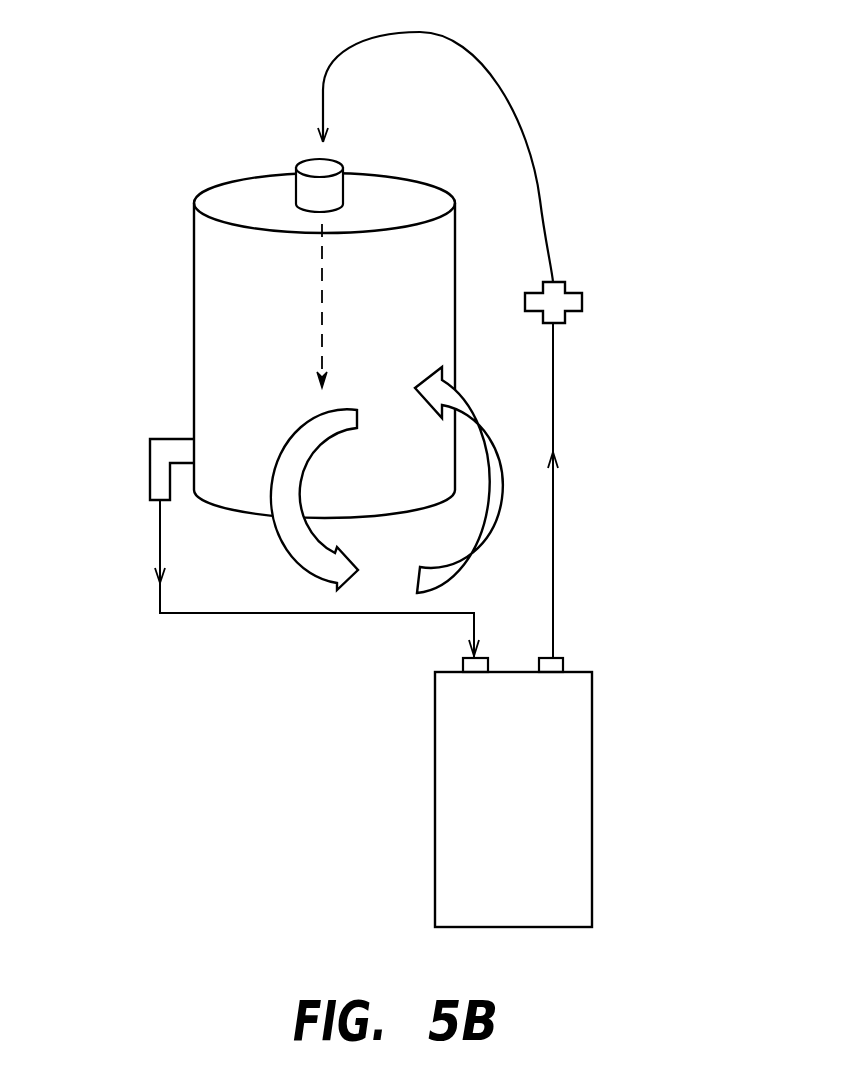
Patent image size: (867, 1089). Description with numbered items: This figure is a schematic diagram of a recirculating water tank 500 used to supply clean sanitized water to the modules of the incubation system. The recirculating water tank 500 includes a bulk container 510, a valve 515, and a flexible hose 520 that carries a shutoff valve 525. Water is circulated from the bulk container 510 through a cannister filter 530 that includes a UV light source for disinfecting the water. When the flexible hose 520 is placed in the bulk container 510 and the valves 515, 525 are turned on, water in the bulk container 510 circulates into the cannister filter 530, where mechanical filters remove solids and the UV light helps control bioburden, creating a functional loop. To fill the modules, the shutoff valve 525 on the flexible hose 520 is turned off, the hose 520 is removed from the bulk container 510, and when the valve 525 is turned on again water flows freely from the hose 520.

The recirculating water tank 500 is at (178, 98).
The bulk container 510 is at (194, 302).
The valve 515 is at (150, 444).
The flexible hose 520 is at (542, 193).
The shutoff valve 525 is at (582, 302).
The cannister filter 530 is at (592, 712).